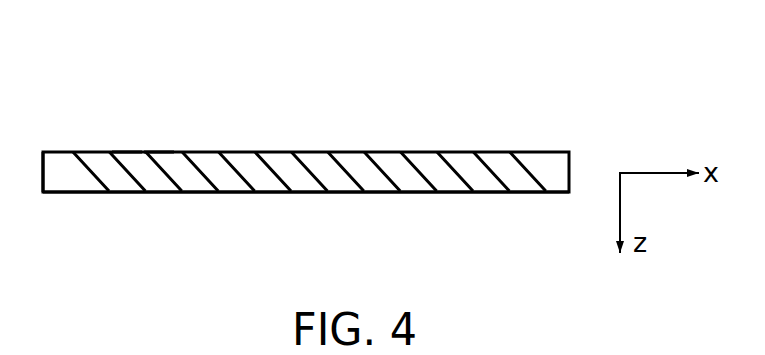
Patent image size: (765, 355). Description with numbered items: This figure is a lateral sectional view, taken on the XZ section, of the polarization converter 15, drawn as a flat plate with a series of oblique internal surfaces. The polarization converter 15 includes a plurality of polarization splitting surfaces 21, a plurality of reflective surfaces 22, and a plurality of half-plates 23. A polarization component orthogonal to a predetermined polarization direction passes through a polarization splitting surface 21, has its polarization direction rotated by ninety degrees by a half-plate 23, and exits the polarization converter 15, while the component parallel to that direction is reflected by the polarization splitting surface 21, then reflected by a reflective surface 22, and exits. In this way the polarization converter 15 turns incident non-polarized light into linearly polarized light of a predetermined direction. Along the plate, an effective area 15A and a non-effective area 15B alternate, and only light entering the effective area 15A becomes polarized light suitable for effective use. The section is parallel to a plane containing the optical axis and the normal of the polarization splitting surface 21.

The polarization converter 15 is at (568, 172).
The effective area 15A is at (123, 141).
The non-effective area 15B is at (155, 141).
The polarization splitting surface 21 is at (87, 168).
The reflective surface 22 is at (167, 170).
The half-plate 23 is at (124, 192).